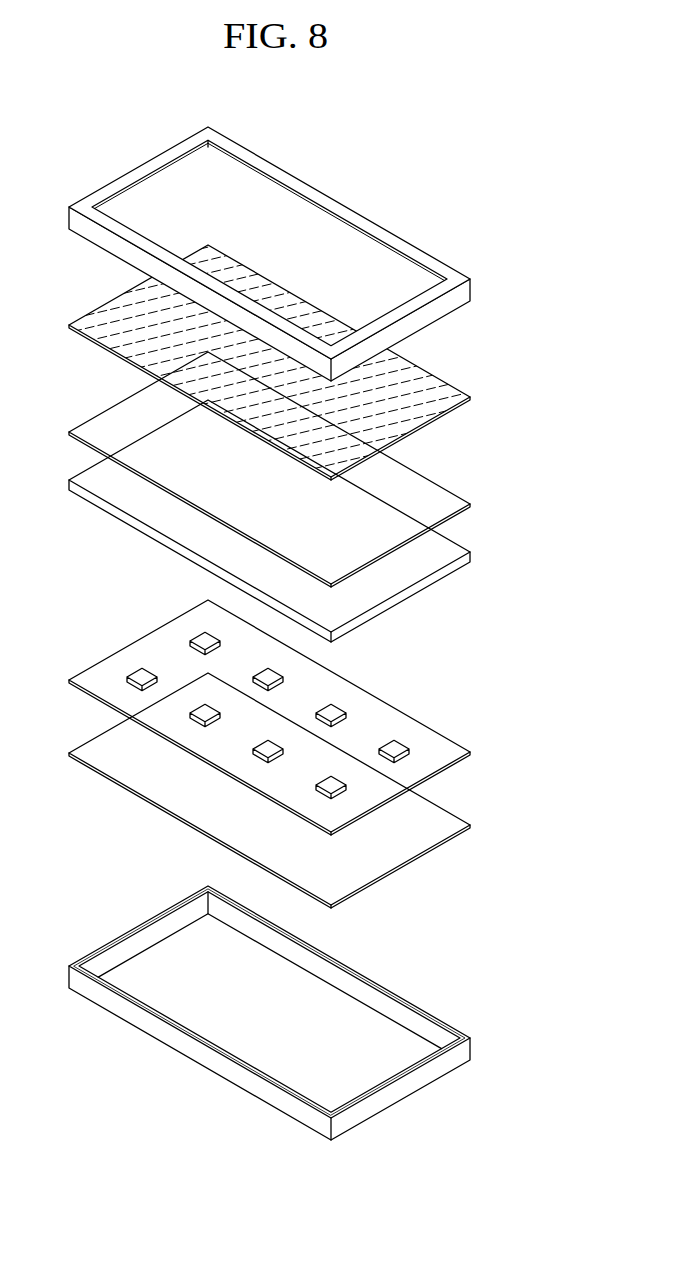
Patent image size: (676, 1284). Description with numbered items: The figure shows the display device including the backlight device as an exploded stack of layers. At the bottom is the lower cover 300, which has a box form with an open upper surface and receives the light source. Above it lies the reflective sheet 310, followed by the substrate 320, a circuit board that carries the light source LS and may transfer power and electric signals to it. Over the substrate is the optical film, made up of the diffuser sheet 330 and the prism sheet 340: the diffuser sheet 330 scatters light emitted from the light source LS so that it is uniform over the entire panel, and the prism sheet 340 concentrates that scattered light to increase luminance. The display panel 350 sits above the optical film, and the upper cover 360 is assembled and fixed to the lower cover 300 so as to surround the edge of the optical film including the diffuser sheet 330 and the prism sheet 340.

The lower cover 300 is at (430, 1072).
The reflective sheet 310 is at (443, 822).
The substrate 320 is at (443, 752).
The light source LS is at (395, 750).
The diffuser sheet 330 is at (448, 553).
The prism sheet 340 is at (440, 503).
The display panel 350 is at (442, 392).
The upper cover 360 is at (460, 277).